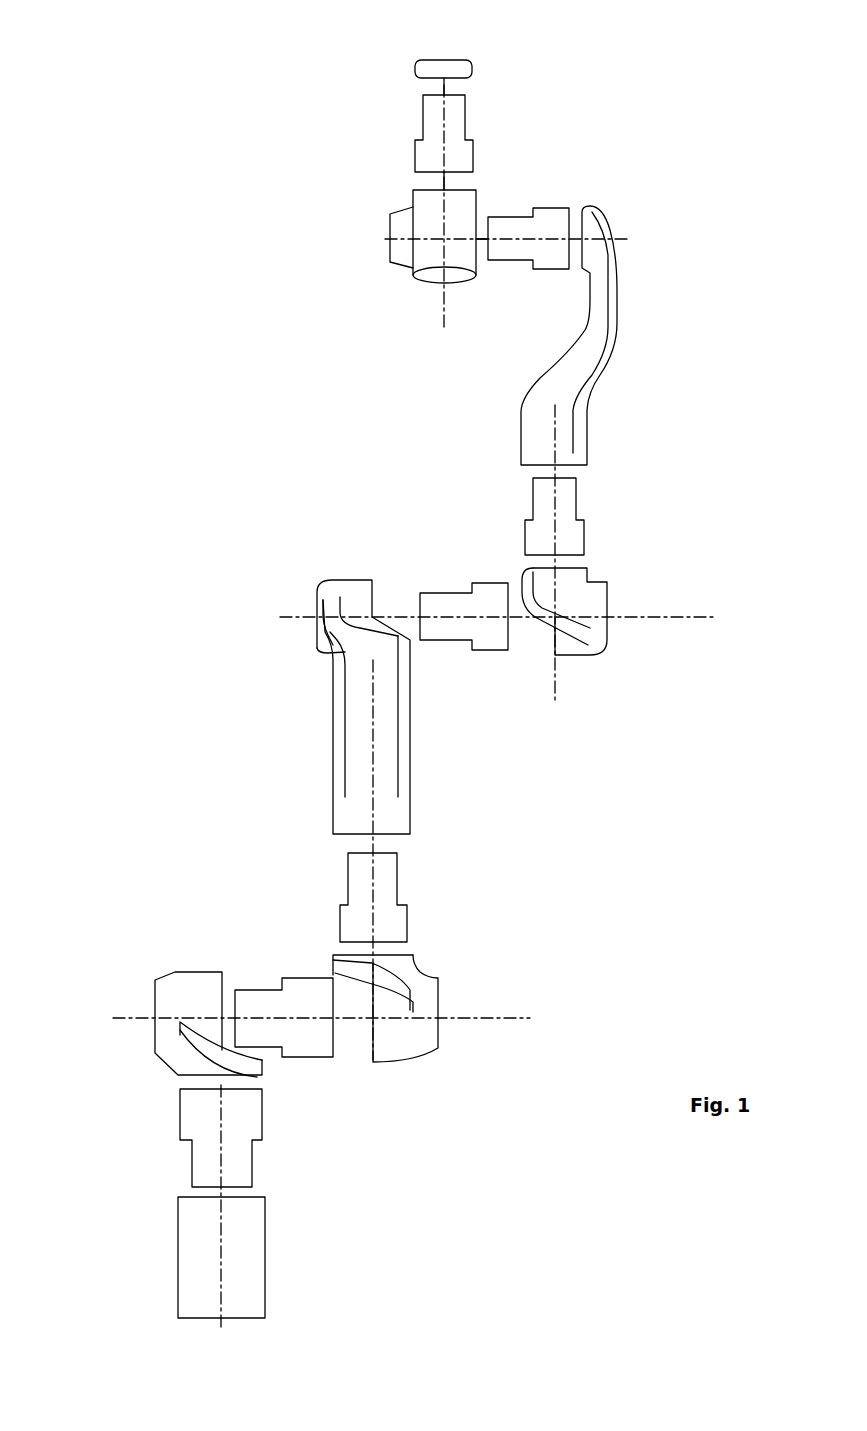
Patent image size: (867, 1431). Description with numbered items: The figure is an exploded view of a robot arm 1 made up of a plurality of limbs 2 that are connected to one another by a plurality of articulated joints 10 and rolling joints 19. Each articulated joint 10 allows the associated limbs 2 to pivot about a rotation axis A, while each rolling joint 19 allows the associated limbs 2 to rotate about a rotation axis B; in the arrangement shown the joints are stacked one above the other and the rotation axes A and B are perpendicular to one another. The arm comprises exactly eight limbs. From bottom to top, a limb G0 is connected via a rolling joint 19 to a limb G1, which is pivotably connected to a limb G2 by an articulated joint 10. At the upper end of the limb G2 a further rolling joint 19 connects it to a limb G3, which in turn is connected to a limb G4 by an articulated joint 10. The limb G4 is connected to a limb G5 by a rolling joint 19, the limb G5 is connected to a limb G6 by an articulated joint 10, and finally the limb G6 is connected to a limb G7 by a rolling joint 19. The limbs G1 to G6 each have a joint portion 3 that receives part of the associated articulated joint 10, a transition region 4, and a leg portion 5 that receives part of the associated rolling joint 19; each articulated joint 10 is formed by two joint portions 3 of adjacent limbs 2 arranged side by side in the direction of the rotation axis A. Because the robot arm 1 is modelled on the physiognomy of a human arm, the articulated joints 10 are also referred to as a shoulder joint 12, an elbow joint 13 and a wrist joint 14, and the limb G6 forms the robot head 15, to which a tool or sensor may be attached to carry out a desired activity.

The robot arm 1 is at (280, 460).
The limb 2 is at (383, 762).
The joint portion 3 is at (363, 806).
The transition region 4 is at (577, 595).
The leg portion 5 is at (618, 310).
The articulated joint 10 is at (477, 656).
The shoulder joint 12 is at (333, 1058).
The elbow joint 13 is at (508, 650).
The wrist joint 14 is at (565, 208).
The robot head 15 is at (427, 256).
The rolling joint 19 is at (467, 126).
The rotation axis A is at (382, 239).
The rotation axis B is at (440, 35).
The limb G0 is at (178, 1263).
The limb G1 is at (168, 1000).
The limb G2 is at (333, 955).
The limb G3 is at (332, 770).
The limb G4 is at (520, 567).
The limb G5 is at (560, 360).
The limb G6 is at (405, 233).
The limb G7 is at (414, 70).